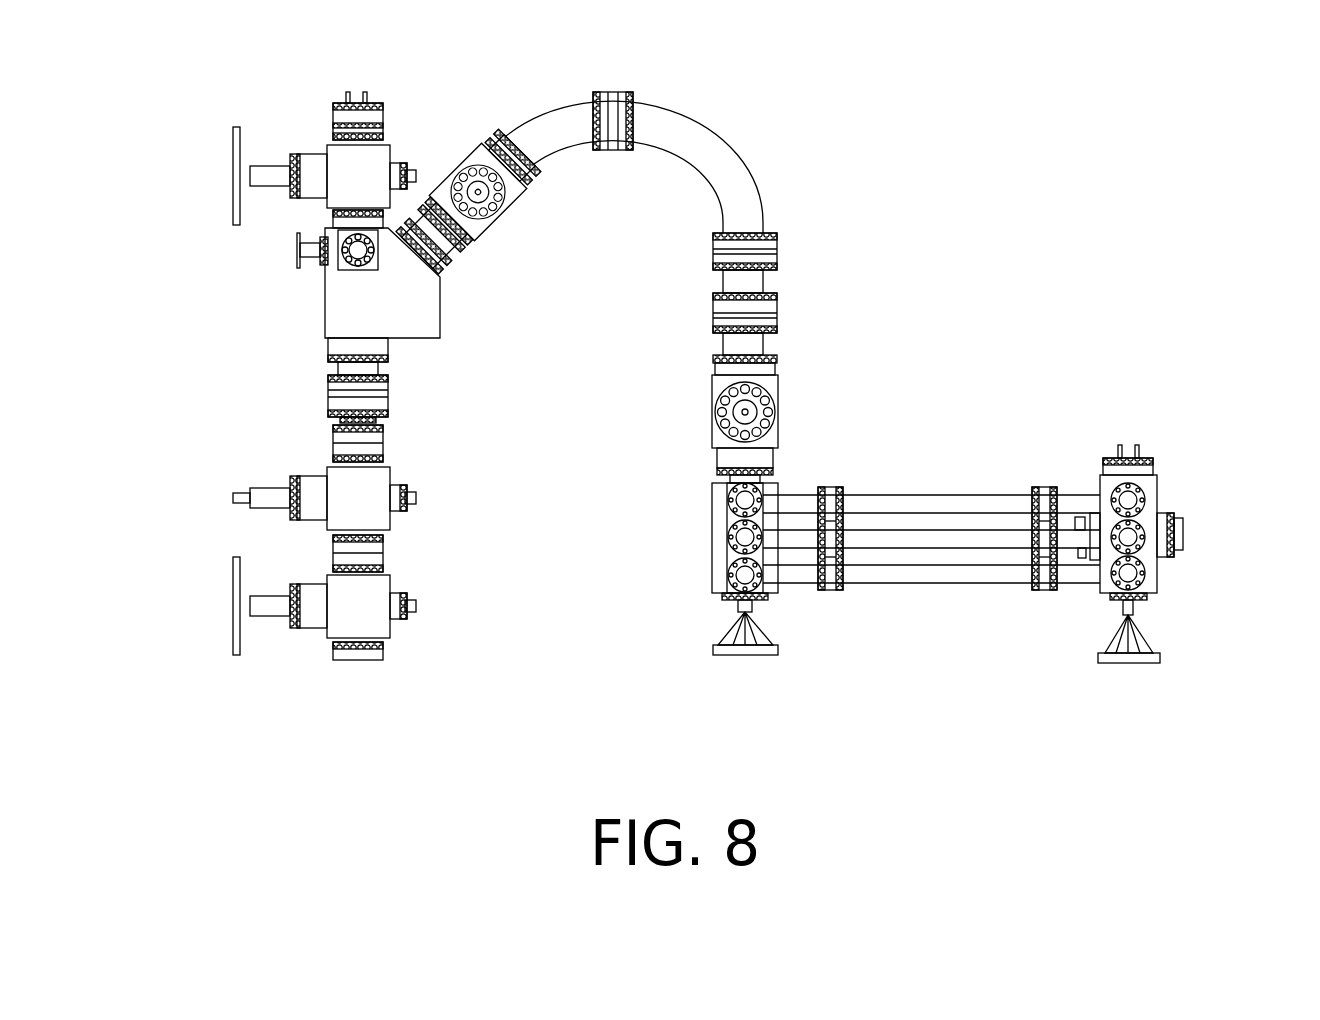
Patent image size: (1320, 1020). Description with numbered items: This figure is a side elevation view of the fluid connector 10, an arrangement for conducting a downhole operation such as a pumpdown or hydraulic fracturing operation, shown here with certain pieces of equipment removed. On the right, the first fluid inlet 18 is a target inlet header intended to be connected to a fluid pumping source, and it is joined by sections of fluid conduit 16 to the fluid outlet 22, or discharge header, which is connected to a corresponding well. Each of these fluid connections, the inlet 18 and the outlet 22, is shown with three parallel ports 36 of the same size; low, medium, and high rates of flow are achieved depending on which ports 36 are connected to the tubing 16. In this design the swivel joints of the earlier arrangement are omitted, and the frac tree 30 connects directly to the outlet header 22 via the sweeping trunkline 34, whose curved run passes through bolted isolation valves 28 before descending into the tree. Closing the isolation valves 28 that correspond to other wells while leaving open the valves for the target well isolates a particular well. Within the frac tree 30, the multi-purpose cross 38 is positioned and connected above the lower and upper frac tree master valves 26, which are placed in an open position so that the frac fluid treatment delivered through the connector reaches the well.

The fluid connector 10 is at (900, 498).
The fluid conduit 16 is at (1078, 497).
The first fluid inlet 18 is at (1137, 478).
The fluid outlet 22 is at (725, 515).
The frac tree valves 26 is at (350, 608).
The isolation valves 28 is at (460, 172).
The frac tree 30 is at (373, 283).
The sweeping trunkline 34 is at (727, 172).
The parallel ports 36 is at (1127, 497).
The multi-purpose cross 38 is at (373, 307).